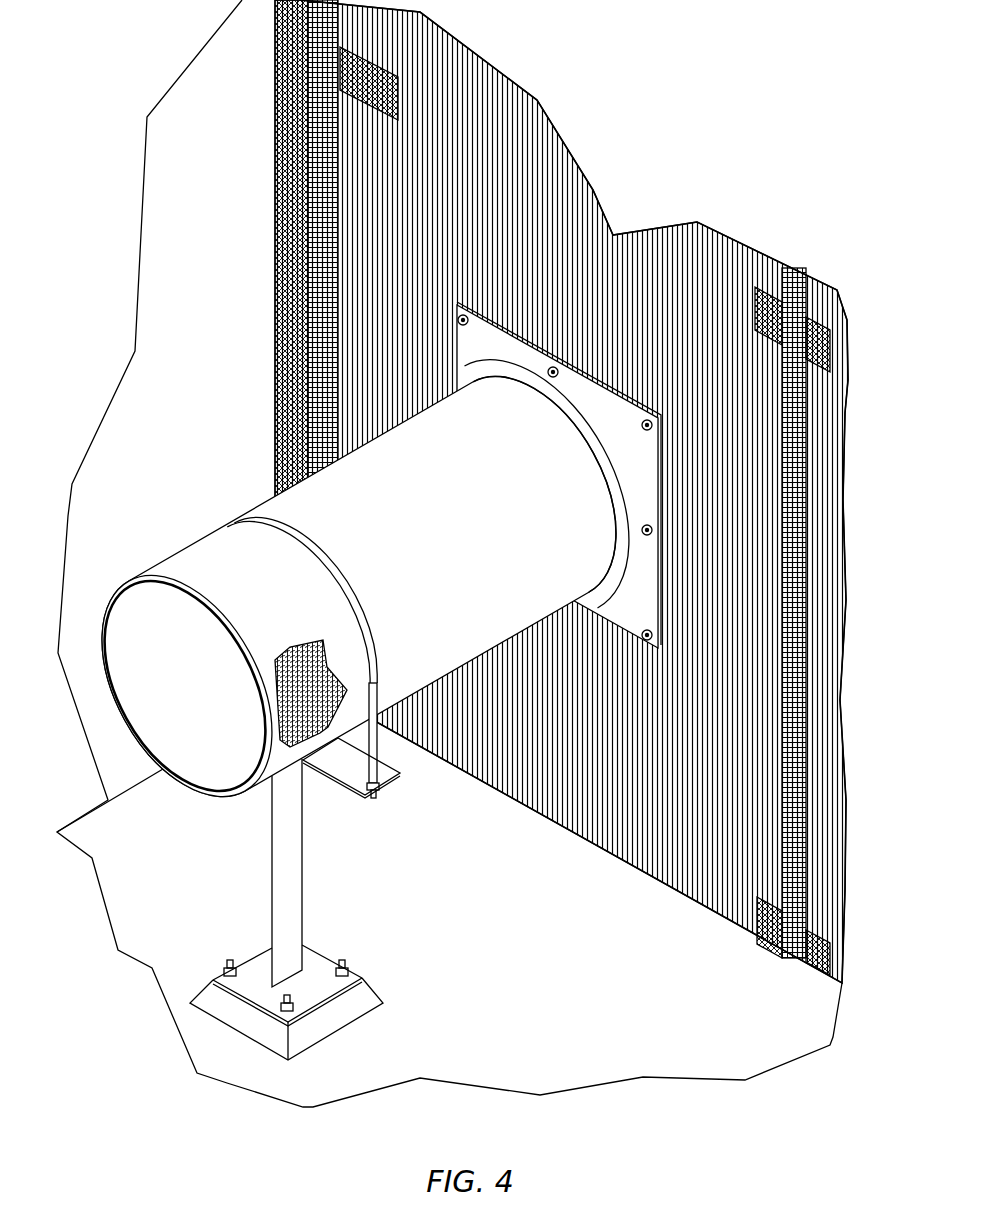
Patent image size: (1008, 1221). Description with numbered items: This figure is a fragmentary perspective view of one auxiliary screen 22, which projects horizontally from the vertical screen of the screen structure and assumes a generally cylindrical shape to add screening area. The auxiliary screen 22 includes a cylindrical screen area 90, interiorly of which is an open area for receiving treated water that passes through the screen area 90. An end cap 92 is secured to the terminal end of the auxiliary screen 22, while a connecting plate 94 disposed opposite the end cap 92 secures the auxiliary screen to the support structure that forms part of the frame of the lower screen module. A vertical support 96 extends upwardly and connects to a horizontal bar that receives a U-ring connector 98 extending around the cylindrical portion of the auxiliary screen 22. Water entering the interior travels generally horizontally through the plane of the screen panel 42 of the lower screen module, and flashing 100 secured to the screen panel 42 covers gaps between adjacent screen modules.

The auxiliary screen 22 is at (200, 424).
The screen panel 42 is at (615, 712).
The screen area 90 is at (512, 555).
The end cap 92 is at (115, 665).
The connecting plate 94 is at (477, 345).
The vertical support 96 is at (292, 883).
The U-ring connector 98 is at (377, 737).
The flashing 100 is at (327, 200).